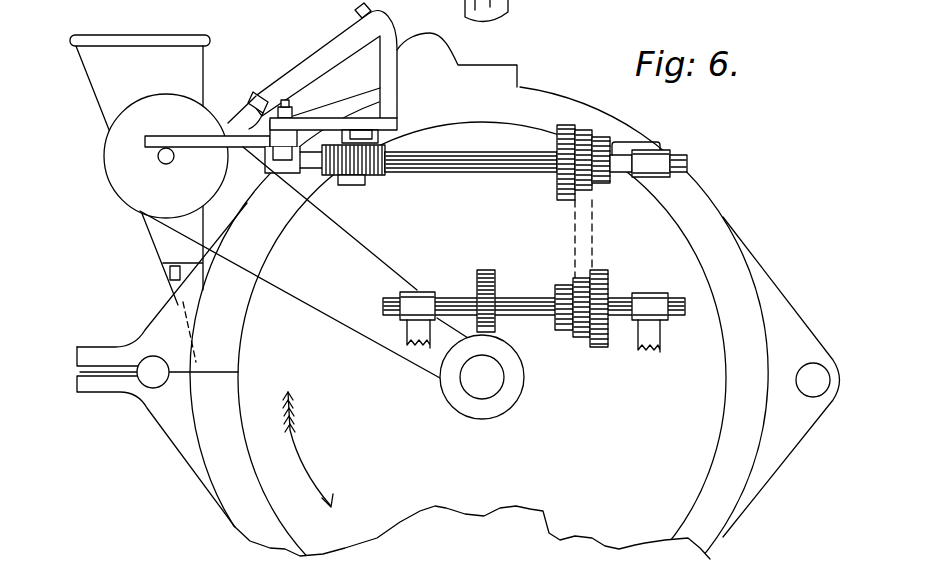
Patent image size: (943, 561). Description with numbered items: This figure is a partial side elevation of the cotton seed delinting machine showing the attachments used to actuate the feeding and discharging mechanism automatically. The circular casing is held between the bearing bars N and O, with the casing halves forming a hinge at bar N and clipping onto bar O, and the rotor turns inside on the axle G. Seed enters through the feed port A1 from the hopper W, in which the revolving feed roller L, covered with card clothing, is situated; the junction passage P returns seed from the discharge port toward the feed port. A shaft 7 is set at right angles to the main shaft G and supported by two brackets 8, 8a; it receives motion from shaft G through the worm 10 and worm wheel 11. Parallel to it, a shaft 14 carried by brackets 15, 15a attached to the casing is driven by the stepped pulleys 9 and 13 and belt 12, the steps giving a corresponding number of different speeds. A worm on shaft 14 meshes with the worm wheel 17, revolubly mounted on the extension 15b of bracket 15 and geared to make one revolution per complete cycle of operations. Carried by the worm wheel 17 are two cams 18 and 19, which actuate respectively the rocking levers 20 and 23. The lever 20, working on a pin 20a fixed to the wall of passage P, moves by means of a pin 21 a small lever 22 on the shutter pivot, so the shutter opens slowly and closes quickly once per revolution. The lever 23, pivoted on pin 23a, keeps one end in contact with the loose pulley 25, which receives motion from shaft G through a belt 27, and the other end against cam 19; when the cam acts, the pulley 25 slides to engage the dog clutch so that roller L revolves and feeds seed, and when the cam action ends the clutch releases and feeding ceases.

The shaft 7 is at (529, 316).
The bracket 8 is at (434, 320).
The bracket 8a is at (650, 322).
The stepped pulley 9 is at (562, 285).
The worm 10 is at (513, 378).
The worm wheel 11 is at (485, 270).
The belt 12 is at (583, 228).
The stepped pulley 13 is at (557, 180).
The shaft 14 is at (474, 172).
The bracket 15 is at (282, 172).
The bracket 15a is at (649, 159).
The extension of bracket 15b is at (350, 177).
The worm wheel 17 is at (386, 174).
The cam 18 is at (395, 124).
The cam 19 is at (355, 137).
The rocking lever 20 is at (308, 68).
The pin 20a is at (357, 12).
The pin 21 is at (256, 93).
The small lever 22 is at (246, 117).
The lever 23 is at (221, 133).
The pin 23a is at (291, 110).
The loose pulley 25 is at (166, 156).
The belt 27 is at (367, 263).
The hopper W is at (140, 170).
The feed roller L is at (262, 279).
The junction passage P is at (363, 79).
The axle G is at (481, 378).
The bearing bar O is at (162, 365).
The bearing bar N is at (781, 377).
The feed port A1 is at (183, 282).